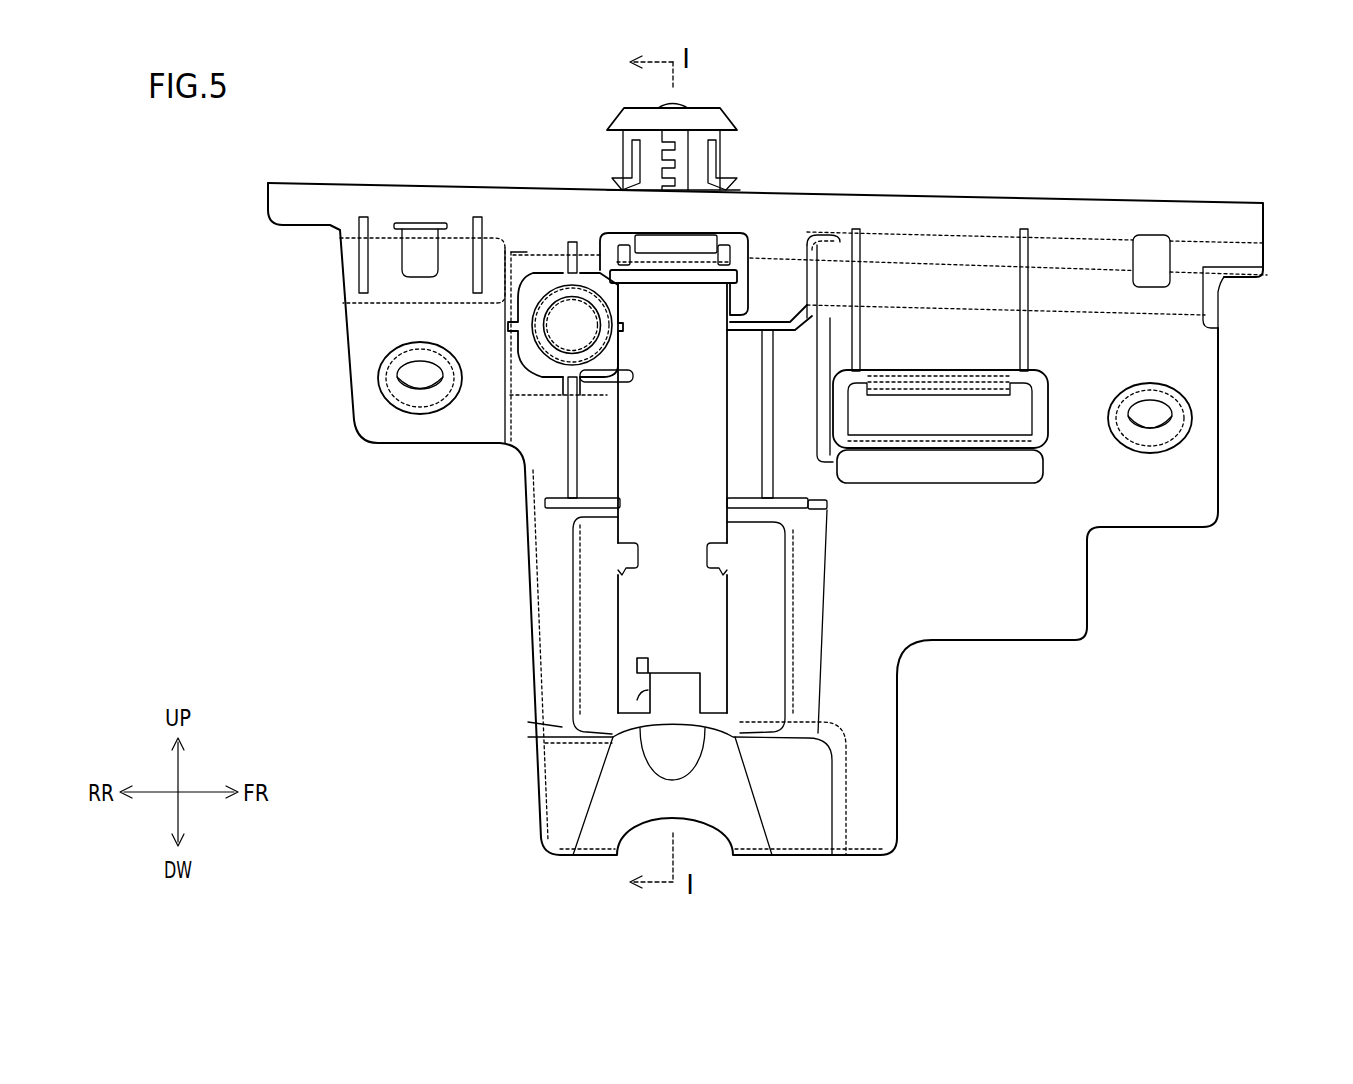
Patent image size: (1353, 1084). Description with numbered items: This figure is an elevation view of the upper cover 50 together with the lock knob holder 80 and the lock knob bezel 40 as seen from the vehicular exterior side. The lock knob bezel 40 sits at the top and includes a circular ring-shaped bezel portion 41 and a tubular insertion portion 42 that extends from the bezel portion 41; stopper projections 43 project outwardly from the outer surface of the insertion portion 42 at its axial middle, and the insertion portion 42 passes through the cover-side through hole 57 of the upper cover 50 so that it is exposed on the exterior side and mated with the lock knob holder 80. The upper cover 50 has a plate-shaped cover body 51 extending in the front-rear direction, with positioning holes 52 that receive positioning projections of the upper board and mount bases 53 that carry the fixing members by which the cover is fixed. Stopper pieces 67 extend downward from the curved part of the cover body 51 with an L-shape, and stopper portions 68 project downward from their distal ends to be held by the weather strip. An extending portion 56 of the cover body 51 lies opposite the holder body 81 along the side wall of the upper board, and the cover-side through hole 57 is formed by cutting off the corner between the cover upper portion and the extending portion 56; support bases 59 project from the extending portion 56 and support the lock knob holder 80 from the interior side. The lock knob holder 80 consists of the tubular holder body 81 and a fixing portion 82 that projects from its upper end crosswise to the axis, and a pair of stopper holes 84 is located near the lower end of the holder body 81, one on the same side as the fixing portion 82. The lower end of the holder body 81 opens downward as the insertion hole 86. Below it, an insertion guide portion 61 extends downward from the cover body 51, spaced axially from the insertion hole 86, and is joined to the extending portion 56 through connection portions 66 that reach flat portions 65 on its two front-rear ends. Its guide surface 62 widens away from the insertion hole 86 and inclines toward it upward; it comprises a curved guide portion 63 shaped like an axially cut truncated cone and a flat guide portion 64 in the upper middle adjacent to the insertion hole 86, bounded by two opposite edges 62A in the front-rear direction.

The lock knob bezel 40 is at (639, 84).
The bezel portion 41 is at (723, 118).
The insertion portion 42 is at (645, 142).
The stopper projections 43 is at (723, 177).
The upper cover 50 is at (1154, 104).
The cover body 51 is at (1073, 216).
The positioning holes 52 is at (404, 262).
The mount bases 53 is at (378, 412).
The extending portion 56 is at (602, 483).
The cover-side through hole 57 is at (745, 262).
The support bases 59 is at (752, 323).
The insertion guide portion 61 is at (553, 853).
The guide surface 62 is at (640, 918).
The opposite edges 62A is at (595, 790).
The curved guide portion 63 is at (593, 830).
The flat guide portion 64 is at (672, 760).
The flat portions 65 is at (553, 767).
The connection portions 66 is at (543, 620).
The stopper pieces 67 is at (952, 332).
The stopper portions 68 is at (973, 392).
The lock knob holder 80 is at (612, 640).
The holder body 81 is at (630, 443).
The fixing portion 82 is at (543, 283).
The stopper holes 84 is at (613, 563).
The insertion hole 86 is at (712, 715).